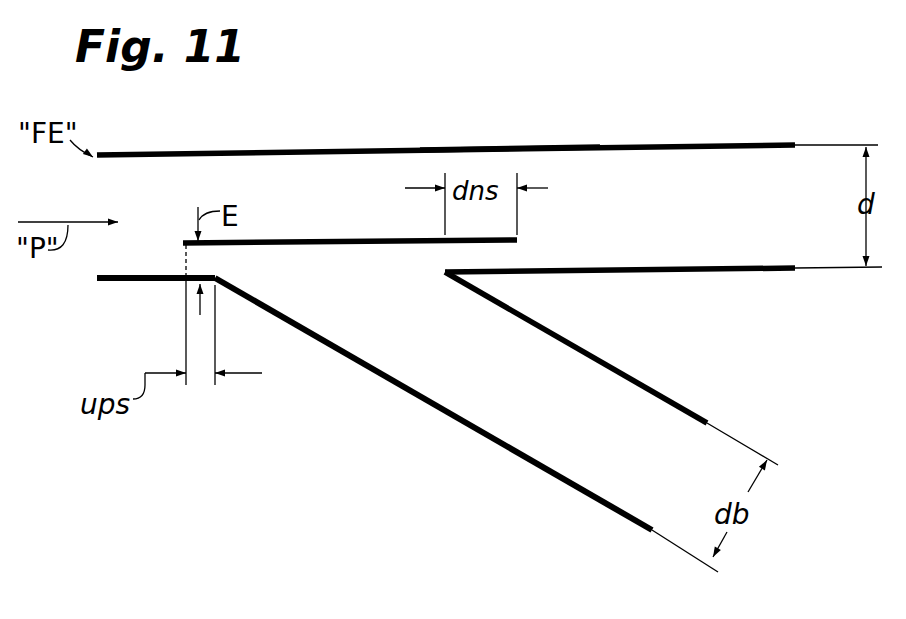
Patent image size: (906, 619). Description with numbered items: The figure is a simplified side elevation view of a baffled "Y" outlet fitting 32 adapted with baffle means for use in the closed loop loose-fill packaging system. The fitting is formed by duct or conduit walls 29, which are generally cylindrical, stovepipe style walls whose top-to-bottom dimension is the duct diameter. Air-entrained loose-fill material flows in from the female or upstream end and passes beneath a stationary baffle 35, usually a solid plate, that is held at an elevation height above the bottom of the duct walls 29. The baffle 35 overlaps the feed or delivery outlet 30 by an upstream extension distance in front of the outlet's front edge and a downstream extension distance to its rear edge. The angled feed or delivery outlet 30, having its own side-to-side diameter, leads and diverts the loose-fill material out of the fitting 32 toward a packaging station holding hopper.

The duct or conduit walls 29 is at (295, 153).
The feed or delivery outlet 30 is at (440, 415).
The baffled "Y" outlet fitting 32 is at (499, 127).
The stationary baffle 35 is at (400, 245).